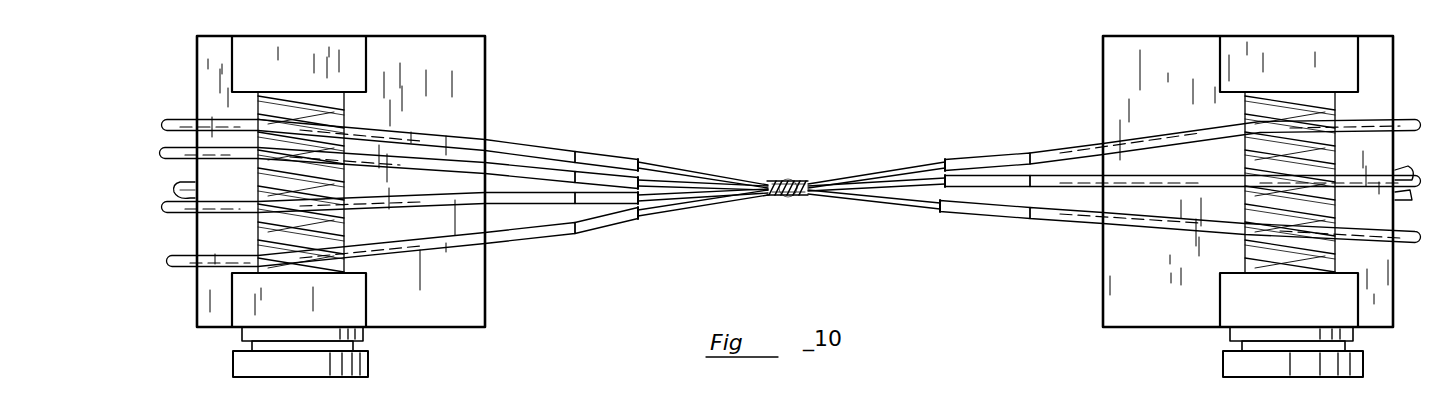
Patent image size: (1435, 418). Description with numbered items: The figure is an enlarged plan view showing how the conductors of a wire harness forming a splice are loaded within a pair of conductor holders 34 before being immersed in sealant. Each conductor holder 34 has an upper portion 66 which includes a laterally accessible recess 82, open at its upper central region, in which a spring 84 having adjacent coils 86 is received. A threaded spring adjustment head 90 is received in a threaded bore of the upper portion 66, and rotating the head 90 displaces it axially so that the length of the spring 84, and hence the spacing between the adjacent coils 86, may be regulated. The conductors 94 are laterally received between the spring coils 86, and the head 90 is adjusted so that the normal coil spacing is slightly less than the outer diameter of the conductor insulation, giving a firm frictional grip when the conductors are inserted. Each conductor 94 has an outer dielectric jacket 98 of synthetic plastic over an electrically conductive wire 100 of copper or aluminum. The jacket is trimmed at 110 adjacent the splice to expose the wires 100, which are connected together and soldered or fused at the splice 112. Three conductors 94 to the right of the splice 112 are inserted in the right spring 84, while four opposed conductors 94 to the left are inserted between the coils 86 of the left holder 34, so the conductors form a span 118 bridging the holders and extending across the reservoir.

The conductor holder 34 is at (794, 227).
The upper portion 66 is at (473, 310).
The laterally accessible recess 82 is at (306, 95).
The spring 84 is at (335, 100).
The coils 86 is at (320, 222).
The threaded spring adjustment head 90 is at (297, 378).
The conductors 94 is at (512, 141).
The outer dielectric jacket 98 is at (576, 150).
The electrically conductive wire 100 is at (715, 200).
The jacket trim location 110 is at (645, 160).
The splice 112 is at (788, 182).
The span 118 is at (790, 116).